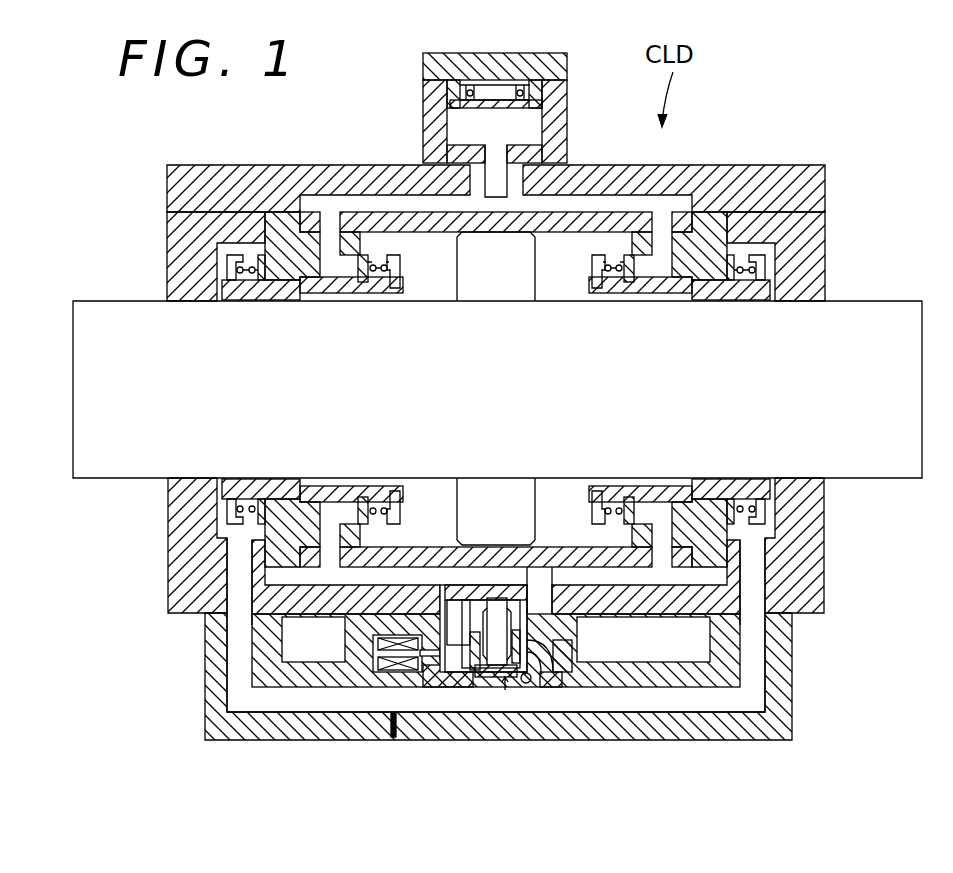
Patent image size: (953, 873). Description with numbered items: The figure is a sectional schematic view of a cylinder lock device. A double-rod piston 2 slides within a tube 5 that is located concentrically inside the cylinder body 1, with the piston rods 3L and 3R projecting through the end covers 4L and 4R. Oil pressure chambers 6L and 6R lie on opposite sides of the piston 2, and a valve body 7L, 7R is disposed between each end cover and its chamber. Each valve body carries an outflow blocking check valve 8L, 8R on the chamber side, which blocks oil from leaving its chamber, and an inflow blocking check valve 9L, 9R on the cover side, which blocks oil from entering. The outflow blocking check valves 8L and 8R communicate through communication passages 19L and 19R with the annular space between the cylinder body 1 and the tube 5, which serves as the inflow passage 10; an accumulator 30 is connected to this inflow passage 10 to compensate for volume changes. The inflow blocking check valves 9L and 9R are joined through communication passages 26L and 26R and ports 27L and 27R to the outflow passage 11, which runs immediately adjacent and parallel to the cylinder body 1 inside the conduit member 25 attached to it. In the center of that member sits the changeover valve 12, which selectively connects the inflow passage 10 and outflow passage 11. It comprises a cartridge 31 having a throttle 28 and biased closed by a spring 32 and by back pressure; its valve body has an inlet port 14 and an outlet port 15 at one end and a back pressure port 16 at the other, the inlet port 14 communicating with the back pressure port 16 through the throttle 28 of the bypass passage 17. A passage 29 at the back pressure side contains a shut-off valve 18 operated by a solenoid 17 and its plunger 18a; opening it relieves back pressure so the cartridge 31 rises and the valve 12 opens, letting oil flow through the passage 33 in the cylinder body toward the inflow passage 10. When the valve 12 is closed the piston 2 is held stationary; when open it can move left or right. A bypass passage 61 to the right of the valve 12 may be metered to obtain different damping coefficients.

The cylinder body 1 is at (797, 167).
The piston 2 is at (528, 253).
The piston rod 3L is at (108, 316).
The piston rod 3R is at (903, 307).
The end cover 4L is at (172, 526).
The end cover 4R is at (823, 551).
The tube 5 is at (418, 253).
The oil pressure chamber 6L is at (364, 256).
The oil pressure chamber 6R is at (604, 243).
The valve body 7L is at (270, 232).
The valve body 7R is at (723, 235).
The outflow blocking check valve 8L is at (329, 232).
The outflow blocking check valve 8R is at (662, 210).
The inflow blocking check valve 9L is at (262, 260).
The inflow blocking check valve 9R is at (742, 250).
The inflow passage 10 is at (708, 232).
The outflow passage 11 is at (277, 700).
The changeover valve 12 is at (510, 690).
The inlet port 14 is at (483, 656).
The outlet port 15 is at (550, 690).
The back pressure port 16 is at (495, 603).
The bypass passage 17 is at (399, 673).
The shut-off valve 18 is at (470, 682).
The pin 18a is at (380, 708).
The communication passage 19L is at (370, 250).
The communication passage 19R is at (630, 288).
The conduit member 25 is at (734, 734).
The communication passage 26L is at (240, 547).
The communication passage 26R is at (752, 540).
The port 27L is at (243, 697).
The port 27R is at (750, 697).
The throttle 28 is at (504, 690).
The passage 29 is at (432, 682).
The accumulator 30 is at (567, 95).
The cartridge 31 is at (537, 707).
The spring 32 is at (535, 622).
The passage 33 is at (538, 601).
The bypass passage 61 is at (524, 690).